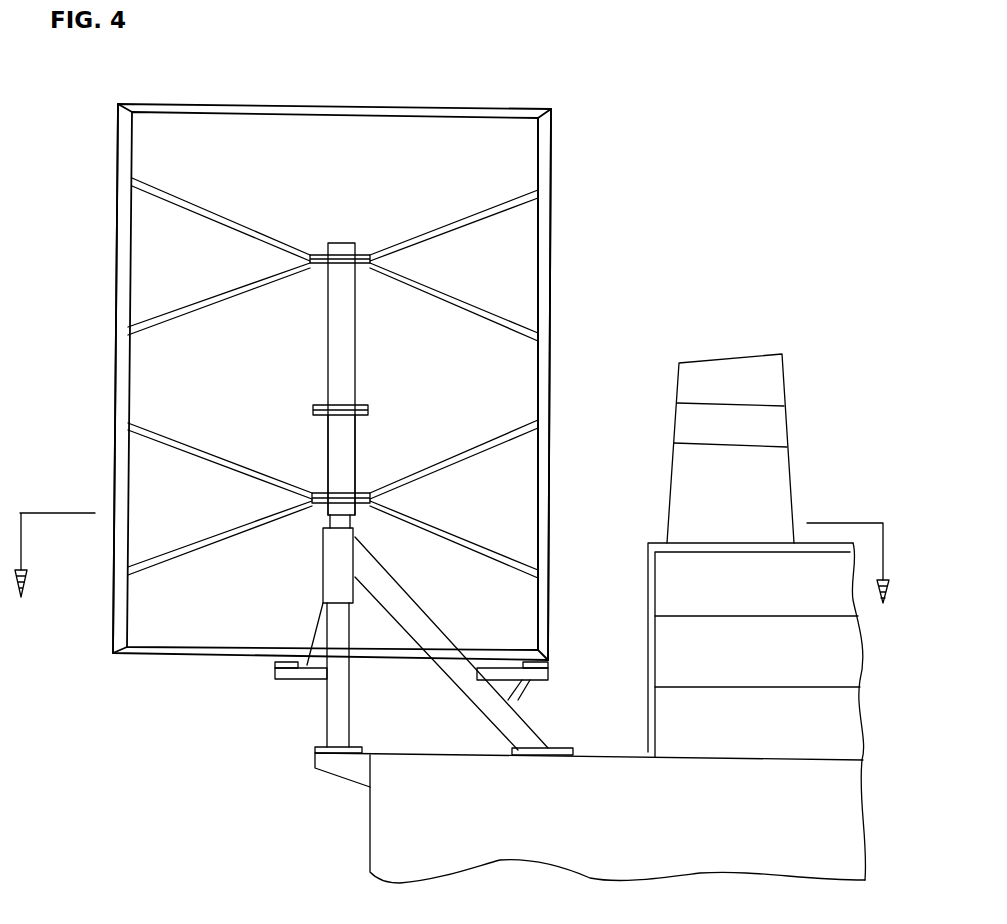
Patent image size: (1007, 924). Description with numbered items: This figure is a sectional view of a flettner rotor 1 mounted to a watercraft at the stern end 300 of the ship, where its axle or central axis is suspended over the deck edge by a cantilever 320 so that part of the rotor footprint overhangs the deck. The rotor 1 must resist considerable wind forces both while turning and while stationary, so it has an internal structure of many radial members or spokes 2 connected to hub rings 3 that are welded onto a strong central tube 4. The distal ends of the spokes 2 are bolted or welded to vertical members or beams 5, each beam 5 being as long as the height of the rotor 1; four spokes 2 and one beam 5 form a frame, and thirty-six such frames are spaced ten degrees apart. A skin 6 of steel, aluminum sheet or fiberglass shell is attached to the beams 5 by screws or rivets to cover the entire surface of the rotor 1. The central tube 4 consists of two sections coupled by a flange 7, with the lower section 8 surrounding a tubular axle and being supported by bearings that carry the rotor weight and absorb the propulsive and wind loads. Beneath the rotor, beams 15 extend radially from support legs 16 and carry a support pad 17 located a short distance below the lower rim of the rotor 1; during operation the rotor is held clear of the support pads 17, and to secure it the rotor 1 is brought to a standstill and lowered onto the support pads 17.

The flettner rotor 1 is at (125, 657).
The spokes 2 is at (148, 333).
The hub rings 3 is at (325, 257).
The central tube 4 is at (357, 333).
The beams 5 is at (118, 245).
The skin 6 is at (552, 320).
The flange 7 is at (313, 410).
The lower section 8 is at (355, 452).
The beams 15 is at (292, 680).
The support legs 16 is at (335, 718).
The support pad 17 is at (275, 665).
The stern end 300 is at (370, 830).
The cantilever 320 is at (316, 760).